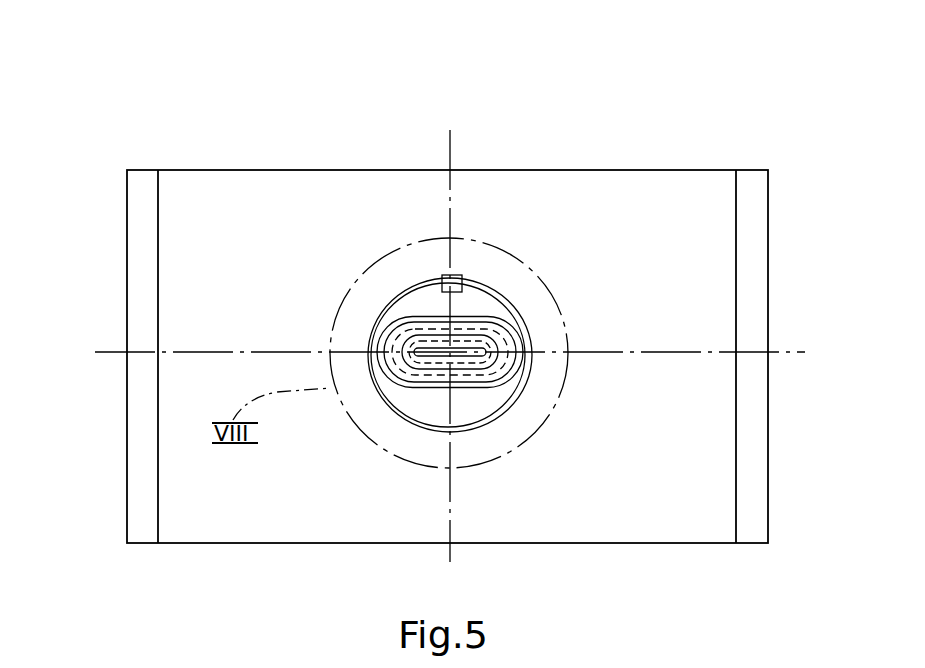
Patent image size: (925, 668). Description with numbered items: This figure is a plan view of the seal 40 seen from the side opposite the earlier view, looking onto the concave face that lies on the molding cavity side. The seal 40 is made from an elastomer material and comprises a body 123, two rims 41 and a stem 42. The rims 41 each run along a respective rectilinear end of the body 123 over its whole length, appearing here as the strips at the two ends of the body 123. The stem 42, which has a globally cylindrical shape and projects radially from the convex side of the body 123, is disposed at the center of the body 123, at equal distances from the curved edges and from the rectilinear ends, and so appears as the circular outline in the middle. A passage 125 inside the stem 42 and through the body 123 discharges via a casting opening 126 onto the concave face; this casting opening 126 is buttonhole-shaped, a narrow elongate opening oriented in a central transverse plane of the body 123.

The seal 40 is at (140, 103).
The rims 41 is at (141, 500).
The stem 42 is at (417, 407).
The body 123 is at (254, 527).
The passage 125 is at (484, 338).
The casting opening 126 is at (466, 342).